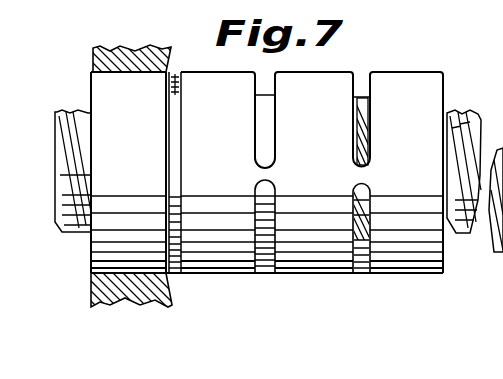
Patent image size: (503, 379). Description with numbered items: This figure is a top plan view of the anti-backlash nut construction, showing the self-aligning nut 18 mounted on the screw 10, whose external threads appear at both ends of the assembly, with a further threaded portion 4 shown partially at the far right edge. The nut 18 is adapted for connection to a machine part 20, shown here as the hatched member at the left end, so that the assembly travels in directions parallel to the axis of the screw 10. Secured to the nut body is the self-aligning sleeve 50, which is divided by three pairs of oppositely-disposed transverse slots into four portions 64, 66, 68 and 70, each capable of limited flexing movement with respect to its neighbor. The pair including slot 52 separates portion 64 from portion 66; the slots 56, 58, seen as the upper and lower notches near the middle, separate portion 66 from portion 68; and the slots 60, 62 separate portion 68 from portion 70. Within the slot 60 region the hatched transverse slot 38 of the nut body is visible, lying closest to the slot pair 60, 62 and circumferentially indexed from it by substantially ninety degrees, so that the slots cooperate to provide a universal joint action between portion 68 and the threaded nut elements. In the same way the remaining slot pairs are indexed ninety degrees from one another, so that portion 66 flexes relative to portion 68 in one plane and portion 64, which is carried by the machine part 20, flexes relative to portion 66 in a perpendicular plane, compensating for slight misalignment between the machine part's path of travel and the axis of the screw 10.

The housing 4 is at (496, 193).
The screw 10 is at (463, 124).
The self-aligning nut 18 is at (404, 318).
The machine part 20 is at (122, 50).
The transverse slot 38 is at (366, 151).
The self-aligning sleeve 50 is at (400, 66).
The transverse slot 52 is at (178, 117).
The transverse slot 56 is at (270, 116).
The transverse slot 58 is at (263, 276).
The transverse slot 60 is at (351, 129).
The transverse slot 62 is at (364, 276).
The sleeve portion 64 is at (93, 83).
The sleeve portion 66 is at (220, 275).
The sleeve portion 68 is at (314, 276).
The sleeve portion 70 is at (418, 276).